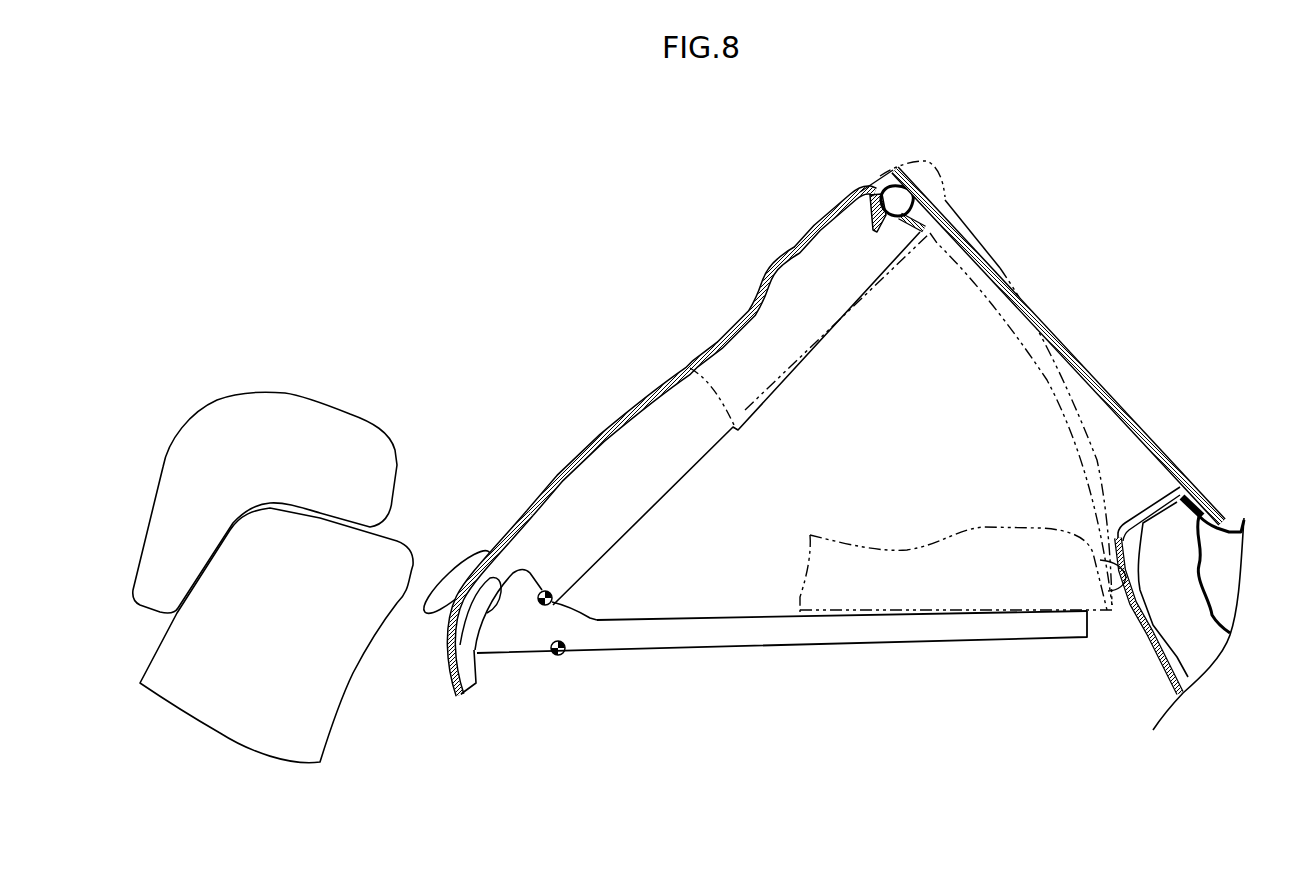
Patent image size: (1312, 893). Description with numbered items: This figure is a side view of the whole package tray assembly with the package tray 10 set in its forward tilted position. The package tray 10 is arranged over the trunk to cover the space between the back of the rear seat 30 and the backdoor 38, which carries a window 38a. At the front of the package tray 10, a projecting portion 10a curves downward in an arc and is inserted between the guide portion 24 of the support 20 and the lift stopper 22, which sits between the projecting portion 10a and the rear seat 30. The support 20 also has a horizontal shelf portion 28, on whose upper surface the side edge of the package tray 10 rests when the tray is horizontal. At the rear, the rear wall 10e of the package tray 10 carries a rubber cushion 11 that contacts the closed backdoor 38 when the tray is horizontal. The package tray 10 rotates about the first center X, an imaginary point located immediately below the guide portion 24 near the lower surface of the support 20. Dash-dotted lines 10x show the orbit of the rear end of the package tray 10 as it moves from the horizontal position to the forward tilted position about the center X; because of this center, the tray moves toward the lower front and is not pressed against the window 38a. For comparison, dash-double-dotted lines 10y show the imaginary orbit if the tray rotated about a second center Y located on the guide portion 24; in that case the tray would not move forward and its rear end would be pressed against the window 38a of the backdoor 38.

The package tray 10 is at (603, 434).
The projecting portion 10a is at (463, 645).
The rear wall 10e is at (867, 186).
The dash-dotted lines 10x is at (1020, 333).
The dash-double-dotted lines 10y is at (990, 237).
The rubber cushion 11 is at (880, 184).
The support 20 is at (757, 650).
The lift stopper 22 is at (453, 568).
The guide portion 24 is at (530, 630).
The shelf portion 28 is at (883, 625).
The rear seat 30 is at (245, 705).
The backdoor 38 is at (1155, 596).
The window 38a is at (1126, 403).
The center of rotation X is at (556, 657).
The second center Y is at (550, 593).